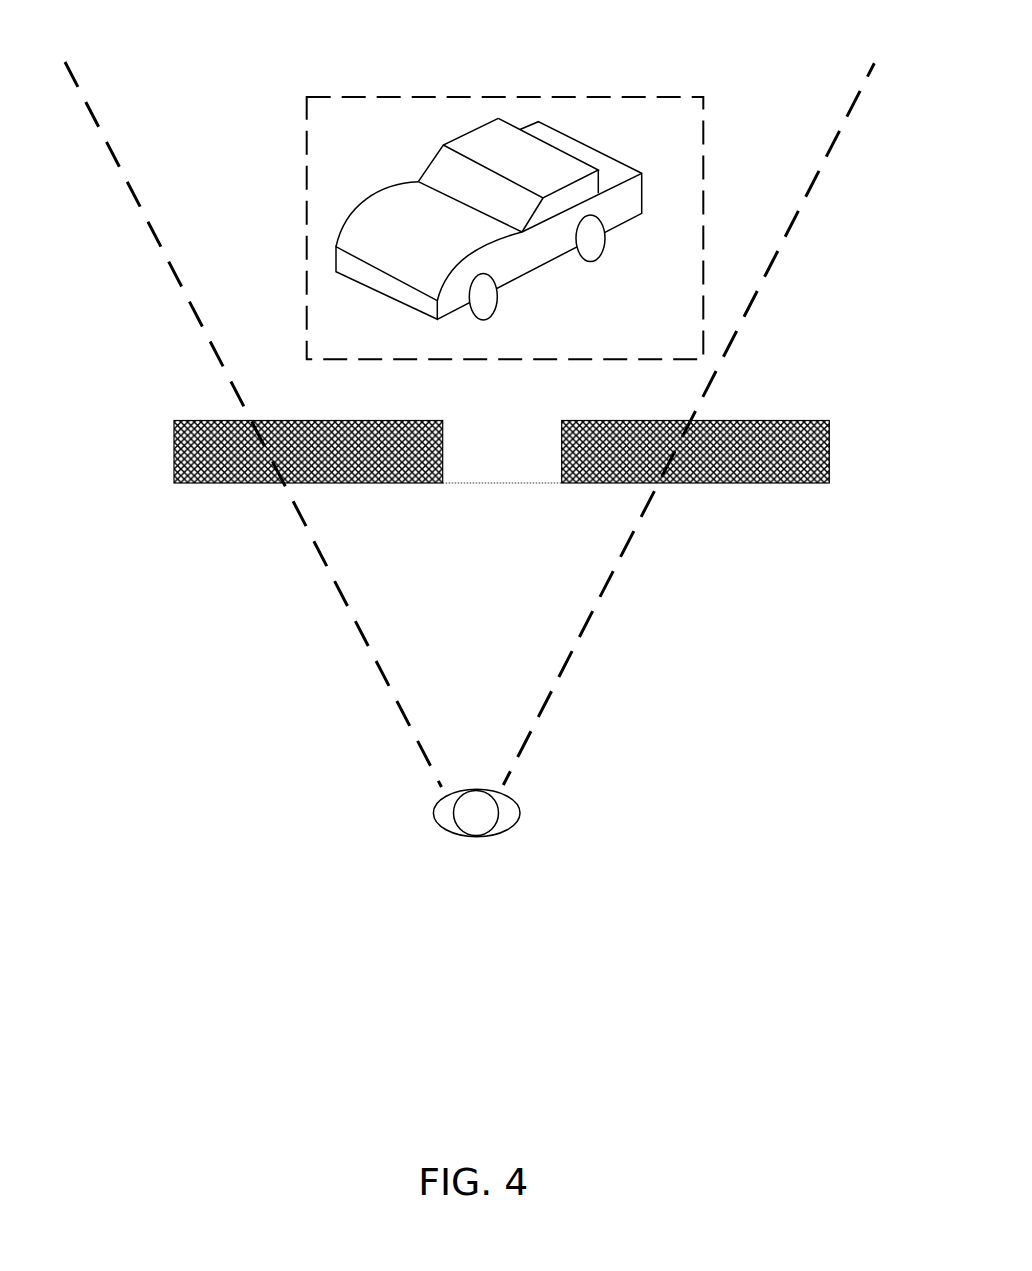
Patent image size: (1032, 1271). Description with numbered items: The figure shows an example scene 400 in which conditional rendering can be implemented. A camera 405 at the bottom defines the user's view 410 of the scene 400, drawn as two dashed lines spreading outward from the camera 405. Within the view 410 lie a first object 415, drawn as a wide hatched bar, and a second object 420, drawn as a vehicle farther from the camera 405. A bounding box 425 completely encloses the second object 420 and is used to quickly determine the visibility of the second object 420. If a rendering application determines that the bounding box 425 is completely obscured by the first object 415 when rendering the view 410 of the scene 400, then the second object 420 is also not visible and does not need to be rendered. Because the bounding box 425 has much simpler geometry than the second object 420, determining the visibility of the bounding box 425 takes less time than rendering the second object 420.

The scene 400 is at (667, 970).
The camera 405 is at (510, 816).
The view 410 is at (492, 658).
The first object 415 is at (501, 452).
The second object 420 is at (446, 298).
The bounding box 425 is at (505, 228).